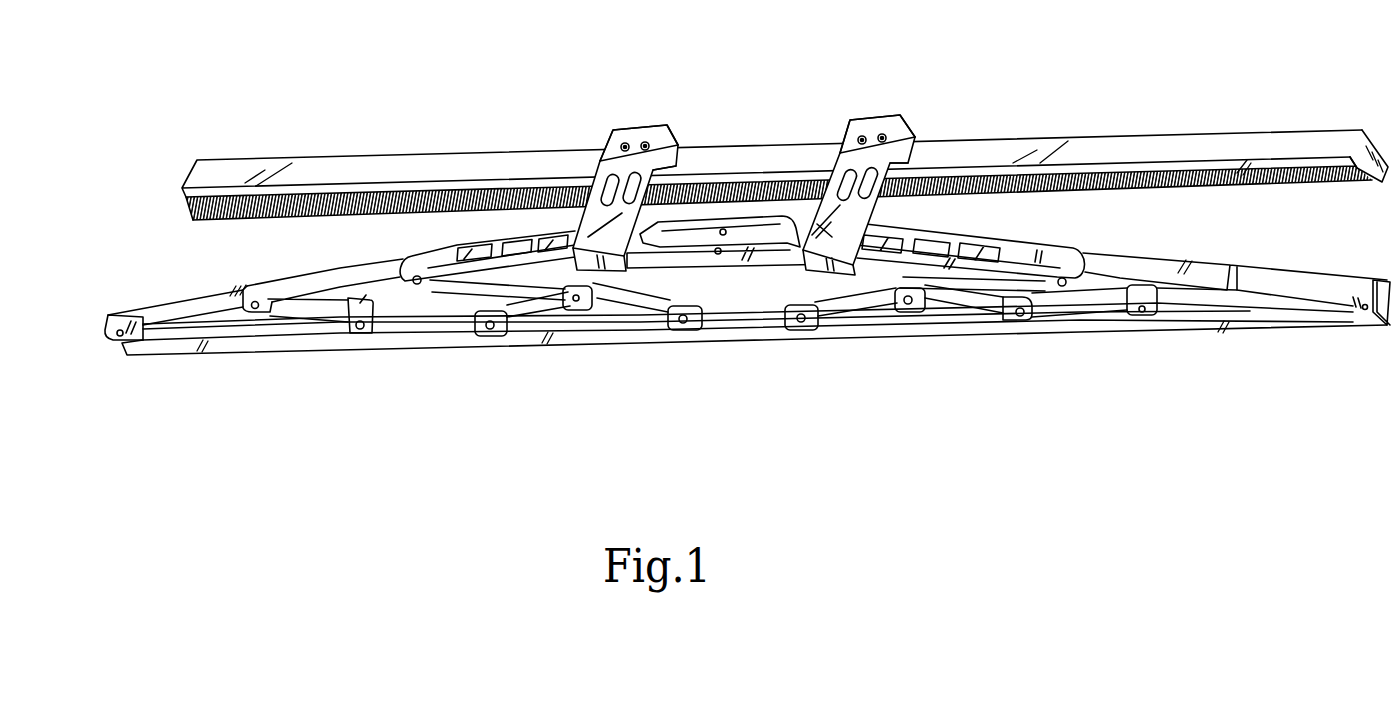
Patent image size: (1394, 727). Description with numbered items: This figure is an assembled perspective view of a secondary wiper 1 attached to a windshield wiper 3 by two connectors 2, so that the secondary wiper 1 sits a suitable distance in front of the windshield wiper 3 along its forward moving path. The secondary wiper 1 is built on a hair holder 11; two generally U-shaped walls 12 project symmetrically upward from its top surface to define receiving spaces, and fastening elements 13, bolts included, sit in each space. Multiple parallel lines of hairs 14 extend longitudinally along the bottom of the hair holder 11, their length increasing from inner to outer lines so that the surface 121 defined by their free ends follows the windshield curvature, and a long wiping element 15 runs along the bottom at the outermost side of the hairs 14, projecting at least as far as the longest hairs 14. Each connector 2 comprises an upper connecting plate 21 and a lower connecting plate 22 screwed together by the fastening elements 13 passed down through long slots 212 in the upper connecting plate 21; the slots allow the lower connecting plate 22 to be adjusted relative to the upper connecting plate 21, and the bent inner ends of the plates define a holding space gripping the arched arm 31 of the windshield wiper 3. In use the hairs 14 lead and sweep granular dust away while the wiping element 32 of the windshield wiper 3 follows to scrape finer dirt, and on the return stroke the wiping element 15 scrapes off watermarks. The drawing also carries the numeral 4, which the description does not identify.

The secondary wiper 1 is at (1105, 132).
The hair holder 11 is at (1027, 137).
The U-shaped walls 12 is at (677, 141).
The surface defined by free ends of the hairs 121 is at (1308, 192).
The fastening elements 13 is at (643, 143).
The hairs 14 is at (1271, 184).
The wiping element 15 is at (1372, 148).
The connector 2 is at (782, 250).
The upper connecting plate 21 is at (606, 170).
The long slots 212 is at (826, 224).
The lower connecting plate 22 is at (680, 210).
The windshield wiper 3 is at (1103, 251).
The arched arm 31 is at (430, 257).
The wiping element 32 is at (945, 326).
The clip 4 is at (603, 177).